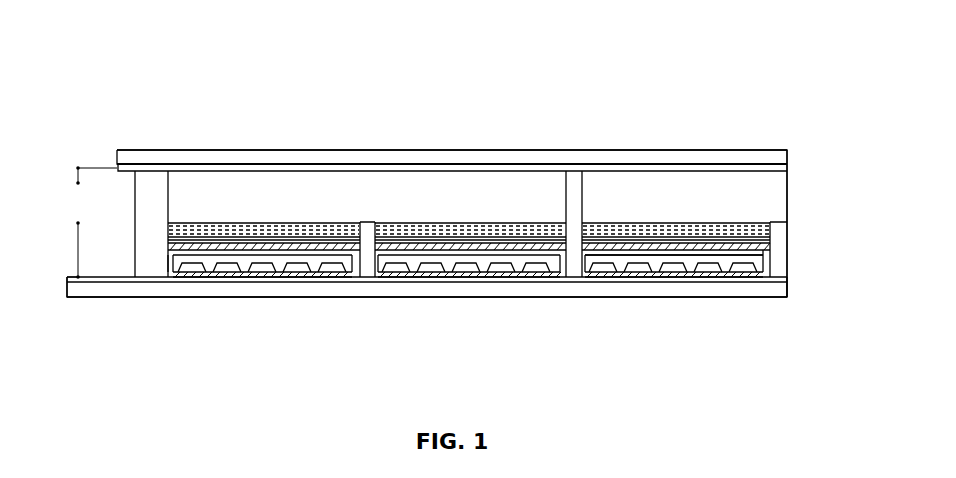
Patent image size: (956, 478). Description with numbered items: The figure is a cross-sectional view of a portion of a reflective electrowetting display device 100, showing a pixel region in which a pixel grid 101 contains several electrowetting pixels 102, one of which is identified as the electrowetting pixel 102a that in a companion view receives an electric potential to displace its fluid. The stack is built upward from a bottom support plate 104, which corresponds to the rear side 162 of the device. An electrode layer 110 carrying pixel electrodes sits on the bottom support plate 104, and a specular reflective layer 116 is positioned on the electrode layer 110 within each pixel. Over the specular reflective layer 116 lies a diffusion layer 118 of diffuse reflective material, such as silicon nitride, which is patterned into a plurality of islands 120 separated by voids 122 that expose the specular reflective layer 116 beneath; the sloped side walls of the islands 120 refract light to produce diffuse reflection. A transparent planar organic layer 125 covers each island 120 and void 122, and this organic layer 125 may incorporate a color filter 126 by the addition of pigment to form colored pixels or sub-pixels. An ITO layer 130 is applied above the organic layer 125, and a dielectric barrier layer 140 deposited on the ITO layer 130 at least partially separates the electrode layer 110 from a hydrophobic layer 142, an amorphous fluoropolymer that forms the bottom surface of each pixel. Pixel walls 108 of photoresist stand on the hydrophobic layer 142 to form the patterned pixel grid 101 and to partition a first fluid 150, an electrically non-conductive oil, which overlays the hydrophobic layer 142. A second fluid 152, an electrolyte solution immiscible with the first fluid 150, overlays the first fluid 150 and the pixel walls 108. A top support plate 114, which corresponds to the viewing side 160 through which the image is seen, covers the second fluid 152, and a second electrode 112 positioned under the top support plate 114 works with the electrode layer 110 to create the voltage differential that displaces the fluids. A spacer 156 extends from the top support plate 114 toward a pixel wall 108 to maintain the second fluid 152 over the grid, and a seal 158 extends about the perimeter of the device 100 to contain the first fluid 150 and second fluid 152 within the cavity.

The reflective electrowetting display device 100 is at (697, 76).
The pixel grid 101 is at (755, 214).
The electrowetting pixel 102 is at (522, 321).
The electrowetting pixel 102a is at (293, 320).
The bottom support plate 104 is at (86, 289).
The pixel wall 108 is at (372, 232).
The electrode layer 110 is at (115, 281).
The second electrode 112 is at (265, 170).
The top support plate 114 is at (155, 158).
The specular reflective layer 116 is at (340, 277).
The diffusion layer 118 is at (171, 265).
The island 120 is at (192, 272).
The void 122 is at (210, 268).
The organic layer 125 is at (312, 262).
The color filter 126 is at (258, 261).
The ITO layer 130 is at (622, 256).
The dielectric barrier layer 140 is at (770, 250).
The hydrophobic layer 142 is at (753, 241).
The first fluid 150 is at (180, 230).
The second fluid 152 is at (512, 190).
The spacer 156 is at (578, 185).
The seal 158 is at (143, 183).
The viewing side 160 is at (406, 106).
The rear side 162 is at (171, 371).